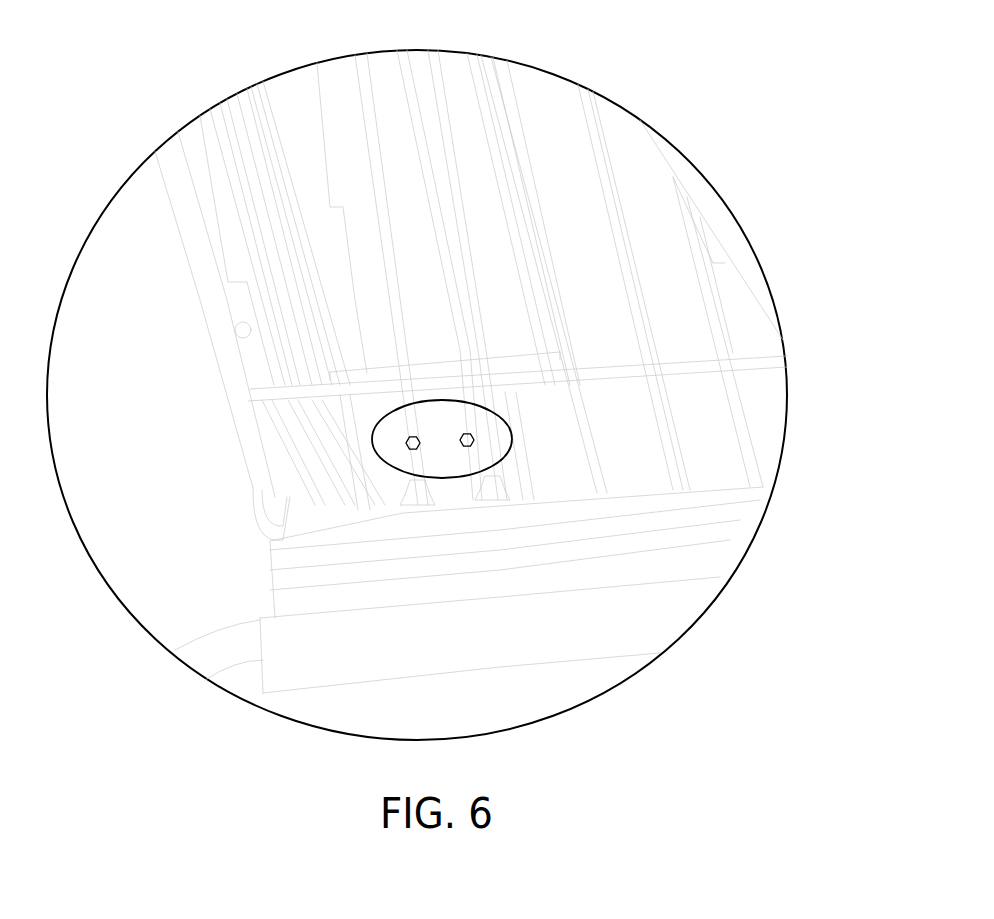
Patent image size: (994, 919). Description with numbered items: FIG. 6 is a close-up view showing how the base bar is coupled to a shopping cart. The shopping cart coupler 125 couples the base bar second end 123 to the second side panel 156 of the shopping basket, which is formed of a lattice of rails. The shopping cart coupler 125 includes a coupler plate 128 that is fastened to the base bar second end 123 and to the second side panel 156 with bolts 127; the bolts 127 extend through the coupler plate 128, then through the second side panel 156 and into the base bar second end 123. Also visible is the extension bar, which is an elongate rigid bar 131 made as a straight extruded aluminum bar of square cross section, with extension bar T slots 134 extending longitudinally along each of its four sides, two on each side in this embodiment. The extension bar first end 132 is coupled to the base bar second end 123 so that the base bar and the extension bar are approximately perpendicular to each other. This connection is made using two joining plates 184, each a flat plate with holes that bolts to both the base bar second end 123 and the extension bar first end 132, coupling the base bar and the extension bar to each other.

The base bar second end 123 is at (497, 480).
The shopping cart coupler 125 is at (403, 512).
The bolts 127 is at (405, 443).
The coupler plate 128 is at (448, 462).
The elongate rigid bar 131 is at (388, 77).
The extension bar first end 132 is at (201, 375).
The extension bar T slots 134 is at (360, 87).
The second side panel 156 is at (600, 170).
The joining plates 184 is at (342, 268).